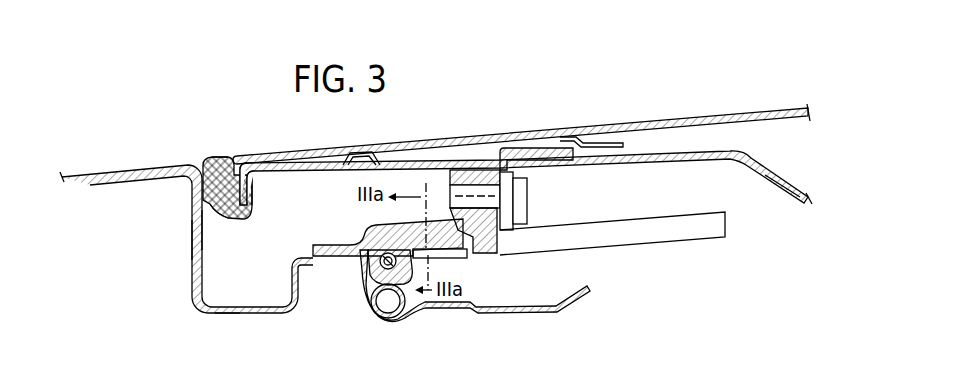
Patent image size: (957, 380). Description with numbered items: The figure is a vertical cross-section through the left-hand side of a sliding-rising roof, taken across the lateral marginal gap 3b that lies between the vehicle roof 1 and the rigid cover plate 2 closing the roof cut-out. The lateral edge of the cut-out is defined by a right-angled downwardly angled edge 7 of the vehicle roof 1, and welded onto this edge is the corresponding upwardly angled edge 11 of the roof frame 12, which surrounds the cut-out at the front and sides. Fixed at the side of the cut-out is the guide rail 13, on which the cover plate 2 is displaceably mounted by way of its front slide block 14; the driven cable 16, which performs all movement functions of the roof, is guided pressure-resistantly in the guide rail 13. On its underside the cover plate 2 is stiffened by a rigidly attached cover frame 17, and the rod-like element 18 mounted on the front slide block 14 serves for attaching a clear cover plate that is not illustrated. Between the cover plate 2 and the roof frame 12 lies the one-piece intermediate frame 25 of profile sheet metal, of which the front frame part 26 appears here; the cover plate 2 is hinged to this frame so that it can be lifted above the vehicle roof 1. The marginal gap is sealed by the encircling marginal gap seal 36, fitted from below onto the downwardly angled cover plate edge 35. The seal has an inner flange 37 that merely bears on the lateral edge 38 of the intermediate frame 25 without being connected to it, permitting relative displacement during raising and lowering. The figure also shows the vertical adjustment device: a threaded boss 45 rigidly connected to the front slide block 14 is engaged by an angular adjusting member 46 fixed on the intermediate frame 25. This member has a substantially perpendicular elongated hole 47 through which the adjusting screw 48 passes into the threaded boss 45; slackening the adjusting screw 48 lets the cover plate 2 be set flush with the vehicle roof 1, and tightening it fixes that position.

The vehicle roof 1 is at (107, 172).
The cover plate 2 is at (772, 110).
The lateral marginal gap 3b is at (218, 146).
The downwardly angled edge 7 is at (204, 225).
The upwardly angled edge 11 is at (192, 260).
The roof frame 12 is at (221, 320).
The guide rail 13 is at (357, 236).
The front slide block 14 is at (455, 253).
The cable 16 is at (377, 265).
The cover frame 17 is at (601, 141).
The rod-like element 18 is at (631, 230).
The intermediate frame 25 is at (779, 198).
The front frame part 26 is at (745, 160).
The downwardly angled cover plate edge 35 is at (231, 157).
The marginal gap seal 36 is at (207, 160).
The inner flange 37 is at (250, 190).
The lateral edge 38 is at (254, 216).
The threaded boss 45 is at (465, 170).
The angular adjusting member 46 is at (527, 157).
The elongated hole 47 is at (523, 217).
The adjusting screw 48 is at (517, 200).